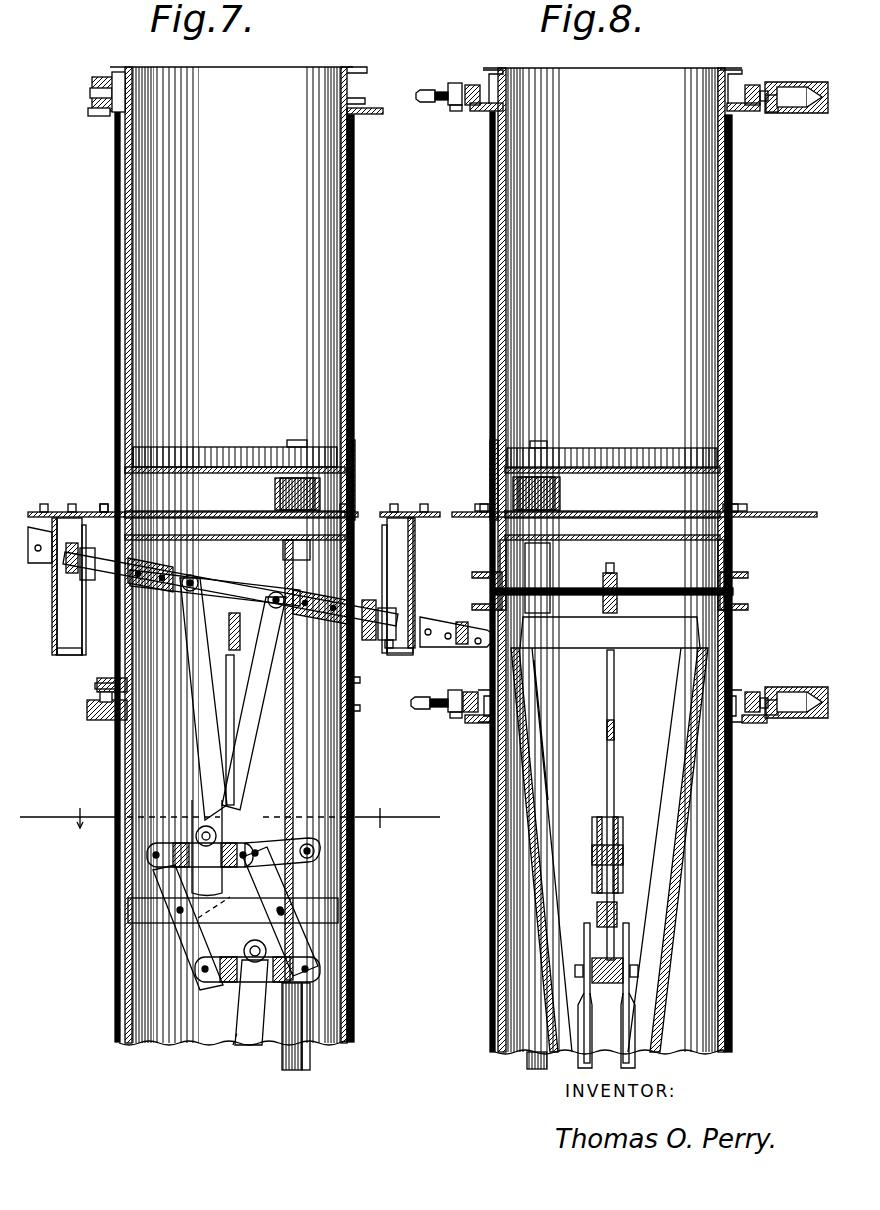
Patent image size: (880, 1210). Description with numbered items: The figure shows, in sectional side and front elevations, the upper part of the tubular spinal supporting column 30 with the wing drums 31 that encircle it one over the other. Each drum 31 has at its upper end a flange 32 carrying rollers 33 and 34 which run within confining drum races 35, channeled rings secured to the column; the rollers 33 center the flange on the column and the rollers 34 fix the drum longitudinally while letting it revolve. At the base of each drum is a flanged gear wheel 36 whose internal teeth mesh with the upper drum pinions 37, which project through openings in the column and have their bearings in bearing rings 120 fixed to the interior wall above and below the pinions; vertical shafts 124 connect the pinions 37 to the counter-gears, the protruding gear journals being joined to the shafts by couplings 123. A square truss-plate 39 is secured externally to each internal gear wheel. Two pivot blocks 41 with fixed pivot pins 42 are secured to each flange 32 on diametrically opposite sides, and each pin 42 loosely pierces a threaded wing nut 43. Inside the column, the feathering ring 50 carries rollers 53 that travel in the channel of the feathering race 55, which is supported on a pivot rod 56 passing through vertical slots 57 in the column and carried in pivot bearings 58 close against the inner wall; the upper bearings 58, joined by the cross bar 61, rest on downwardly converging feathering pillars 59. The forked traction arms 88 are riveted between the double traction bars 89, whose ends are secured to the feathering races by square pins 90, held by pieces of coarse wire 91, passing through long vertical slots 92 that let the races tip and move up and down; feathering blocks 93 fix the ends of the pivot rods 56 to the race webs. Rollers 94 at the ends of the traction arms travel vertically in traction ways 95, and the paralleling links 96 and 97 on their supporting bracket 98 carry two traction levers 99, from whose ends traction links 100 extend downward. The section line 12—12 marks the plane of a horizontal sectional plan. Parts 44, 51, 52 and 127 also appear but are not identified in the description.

In FIG. 7, the section line 12 is at (230, 817).
In FIG. 7, the spinal supporting column 30 is at (231, 556).
In FIG. 8, the spinal supporting column 30 is at (612, 561).
In FIG. 7, the wing drums 31 is at (358, 275).
In FIG. 8, the wing drums 31 is at (490, 270).
In FIG. 7, the flanges 32 is at (380, 116).
In FIG. 8, the flanges 32 is at (740, 118).
In FIG. 7, the rollers 33 is at (95, 685).
In FIG. 7, the rollers 34 is at (100, 72).
In FIG. 7, the drum races 35 is at (368, 72).
In FIG. 8, the drum races 35 is at (725, 70).
In FIG. 7, the flanged gear wheel 36 is at (357, 472).
In FIG. 8, the flanged gear wheel 36 is at (490, 472).
In FIG. 7, the drum pinions 37 is at (275, 490).
In FIG. 8, the drum pinions 37 is at (562, 492).
In FIG. 7, the square truss-plate 39 is at (408, 497).
In FIG. 8, the square truss-plate 39 is at (470, 512).
In FIG. 8, the pivot blocks 41 is at (473, 84).
In FIG. 8, the pivot pins 42 is at (430, 103).
In FIG. 8, the wing nut 43 is at (452, 108).
In FIG. 8, the bracket 44 is at (805, 82).
In FIG. 7, the feathering ring 50 is at (38, 527).
In FIG. 7, the plate 51 is at (54, 570).
In FIG. 7, the bar 52 is at (395, 560).
In FIG. 7, the rollers 53 is at (75, 580).
In FIG. 7, the feathering race 55 is at (104, 506).
In FIG. 8, the feathering race 55 is at (748, 592).
In FIG. 7, the pivot rod 56 is at (250, 590).
In FIG. 8, the pivot rod 56 is at (620, 585).
In FIG. 8, the vertical slots 57 is at (540, 636).
In FIG. 8, the pivot bearings 58 is at (503, 562).
In FIG. 7, the feathering pillars 59 is at (235, 1040).
In FIG. 8, the feathering pillars 59 is at (547, 800).
In FIG. 7, the cross bar 61 is at (262, 690).
In FIG. 8, the cross bar 61 is at (610, 634).
In FIG. 7, the forked traction arms 88 is at (258, 720).
In FIG. 8, the forked traction arms 88 is at (614, 740).
In FIG. 7, the traction bars 89 is at (232, 588).
In FIG. 8, the traction bars 89 is at (612, 570).
In FIG. 7, the square pins 90 is at (165, 578).
In FIG. 7, the coarse wire 91 is at (86, 600).
In FIG. 7, the vertical slots 92 is at (105, 655).
In FIG. 8, the feathering blocks 93 is at (475, 590).
In FIG. 7, the rollers 94 is at (212, 830).
In FIG. 7, the traction ways 95 is at (200, 860).
In FIG. 8, the traction ways 95 is at (614, 820).
In FIG. 7, the paralleling links 96 is at (192, 947).
In FIG. 7, the paralleling links 97 is at (300, 950).
In FIG. 7, the supporting bracket 98 is at (140, 912).
In FIG. 8, the supporting bracket 98 is at (617, 910).
In FIG. 7, the traction lever 99 is at (300, 860).
In FIG. 8, the traction lever 99 is at (584, 930).
In FIG. 7, the traction links 100 is at (310, 1060).
In FIG. 8, the traction links 100 is at (635, 1060).
In FIG. 7, the bearing rings 120 is at (218, 466).
In FIG. 8, the bearing rings 120 is at (618, 466).
In FIG. 7, the couplings 123 is at (285, 550).
In FIG. 8, the couplings 123 is at (548, 563).
In FIG. 7, the vertical shafts 124 is at (288, 745).
In FIG. 8, the vertical shafts 124 is at (548, 710).
In FIG. 8, the shaft 127 is at (530, 1060).